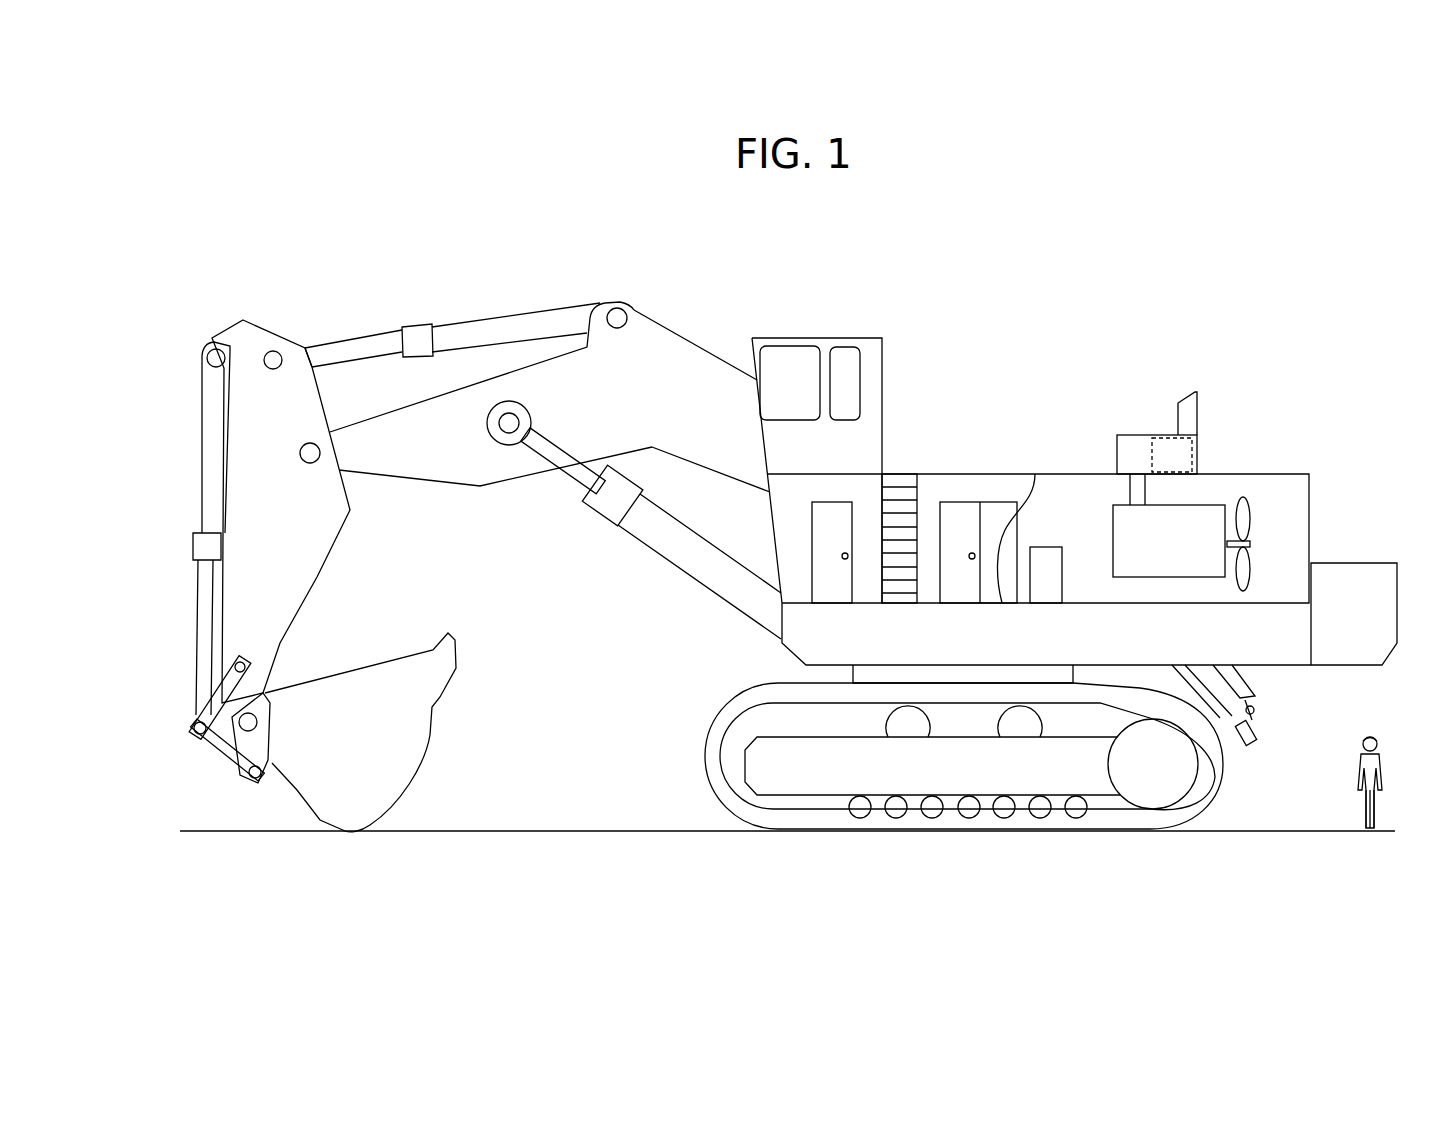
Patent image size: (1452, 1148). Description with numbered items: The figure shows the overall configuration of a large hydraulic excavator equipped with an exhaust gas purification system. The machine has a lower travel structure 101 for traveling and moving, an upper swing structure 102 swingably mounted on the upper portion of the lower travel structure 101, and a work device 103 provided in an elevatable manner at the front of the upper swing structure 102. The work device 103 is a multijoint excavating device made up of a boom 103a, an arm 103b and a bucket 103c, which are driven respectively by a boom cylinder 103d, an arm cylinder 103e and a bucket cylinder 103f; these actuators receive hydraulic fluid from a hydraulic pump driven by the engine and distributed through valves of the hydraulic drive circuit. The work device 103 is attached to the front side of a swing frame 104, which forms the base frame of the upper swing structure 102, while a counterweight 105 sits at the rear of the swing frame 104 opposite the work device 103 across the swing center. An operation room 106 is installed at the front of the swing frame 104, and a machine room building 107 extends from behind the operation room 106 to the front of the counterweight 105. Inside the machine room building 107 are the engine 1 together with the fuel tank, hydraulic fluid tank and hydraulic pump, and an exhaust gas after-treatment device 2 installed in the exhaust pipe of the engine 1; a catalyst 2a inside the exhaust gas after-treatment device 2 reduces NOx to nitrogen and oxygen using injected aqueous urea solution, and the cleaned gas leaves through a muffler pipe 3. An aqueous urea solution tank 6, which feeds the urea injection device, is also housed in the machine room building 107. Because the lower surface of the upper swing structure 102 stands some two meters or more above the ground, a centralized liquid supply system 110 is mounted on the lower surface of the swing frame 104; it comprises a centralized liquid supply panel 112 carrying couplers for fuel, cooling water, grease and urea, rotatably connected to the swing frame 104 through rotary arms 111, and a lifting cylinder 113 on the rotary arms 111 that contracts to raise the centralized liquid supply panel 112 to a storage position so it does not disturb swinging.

The engine 1 is at (1202, 504).
The exhaust gas after-treatment device 2 is at (1133, 435).
The catalyst 2a is at (1189, 457).
The muffler pipe 3 is at (1182, 395).
The aqueous urea solution tank 6 is at (1046, 547).
The lower travel structure 101 is at (700, 758).
The upper swing structure 102 is at (1340, 480).
The work device 103 is at (412, 280).
The boom 103a is at (673, 334).
The arm 103b is at (297, 610).
The bucket 103c is at (420, 777).
The boom cylinder 103d is at (655, 547).
The arm cylinder 103e is at (500, 320).
The bucket cylinder 103f is at (202, 513).
The swing frame 104 is at (790, 655).
The counterweight 105 is at (1376, 563).
The operation room 106 is at (802, 336).
The machine room building 107 is at (998, 474).
The centralized liquid supply system 110 is at (1287, 719).
The rotary arm 111 is at (1187, 783).
The centralized liquid supply panel 112 is at (1247, 745).
The lifting cylinder 113 is at (1245, 696).